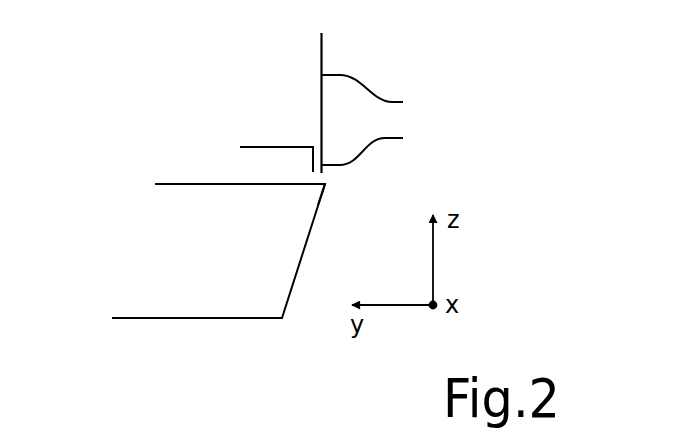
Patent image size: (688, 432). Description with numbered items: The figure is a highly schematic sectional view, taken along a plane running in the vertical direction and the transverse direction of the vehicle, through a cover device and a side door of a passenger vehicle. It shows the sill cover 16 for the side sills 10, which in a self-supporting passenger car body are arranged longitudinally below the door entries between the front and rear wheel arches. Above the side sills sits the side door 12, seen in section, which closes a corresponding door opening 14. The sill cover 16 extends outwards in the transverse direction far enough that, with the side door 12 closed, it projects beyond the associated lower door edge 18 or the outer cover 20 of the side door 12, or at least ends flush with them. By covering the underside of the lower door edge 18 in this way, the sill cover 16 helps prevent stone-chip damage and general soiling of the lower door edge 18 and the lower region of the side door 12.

The side sill 10 is at (303, 331).
The side door 12 is at (389, 63).
The door opening 14 is at (219, 77).
The sill cover 16 is at (331, 194).
The lower door edge 18 is at (382, 143).
The outer cover 20 is at (382, 95).